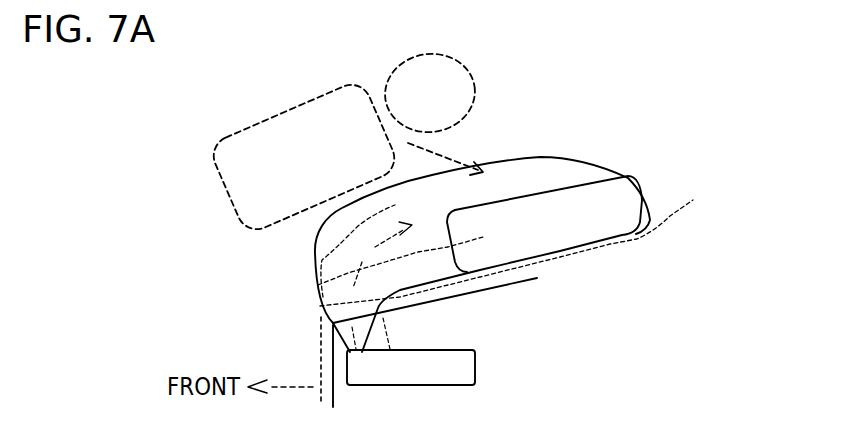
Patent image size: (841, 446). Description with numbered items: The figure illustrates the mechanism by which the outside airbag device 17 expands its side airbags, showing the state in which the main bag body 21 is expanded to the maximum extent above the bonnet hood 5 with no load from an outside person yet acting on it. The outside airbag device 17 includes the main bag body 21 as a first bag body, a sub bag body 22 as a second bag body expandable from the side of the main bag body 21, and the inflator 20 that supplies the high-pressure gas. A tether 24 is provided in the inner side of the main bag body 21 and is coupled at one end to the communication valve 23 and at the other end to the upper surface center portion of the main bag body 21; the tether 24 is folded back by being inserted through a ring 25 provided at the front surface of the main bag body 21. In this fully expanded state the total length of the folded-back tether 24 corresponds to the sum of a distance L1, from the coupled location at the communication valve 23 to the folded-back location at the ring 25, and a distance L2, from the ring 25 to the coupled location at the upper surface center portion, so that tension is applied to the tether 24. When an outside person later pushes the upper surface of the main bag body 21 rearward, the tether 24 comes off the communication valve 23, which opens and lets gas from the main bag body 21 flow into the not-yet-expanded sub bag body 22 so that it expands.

The bonnet hood 5 is at (540, 258).
The outside airbag device 17 is at (575, 362).
The inflator 20 is at (470, 388).
The main bag body 21 is at (550, 157).
The sub bag body 22 is at (613, 207).
The communication valve 23 is at (483, 237).
The tether 24 is at (313, 257).
The ring 25 is at (318, 295).
The distance L1 is at (420, 253).
The distance L2 is at (388, 207).